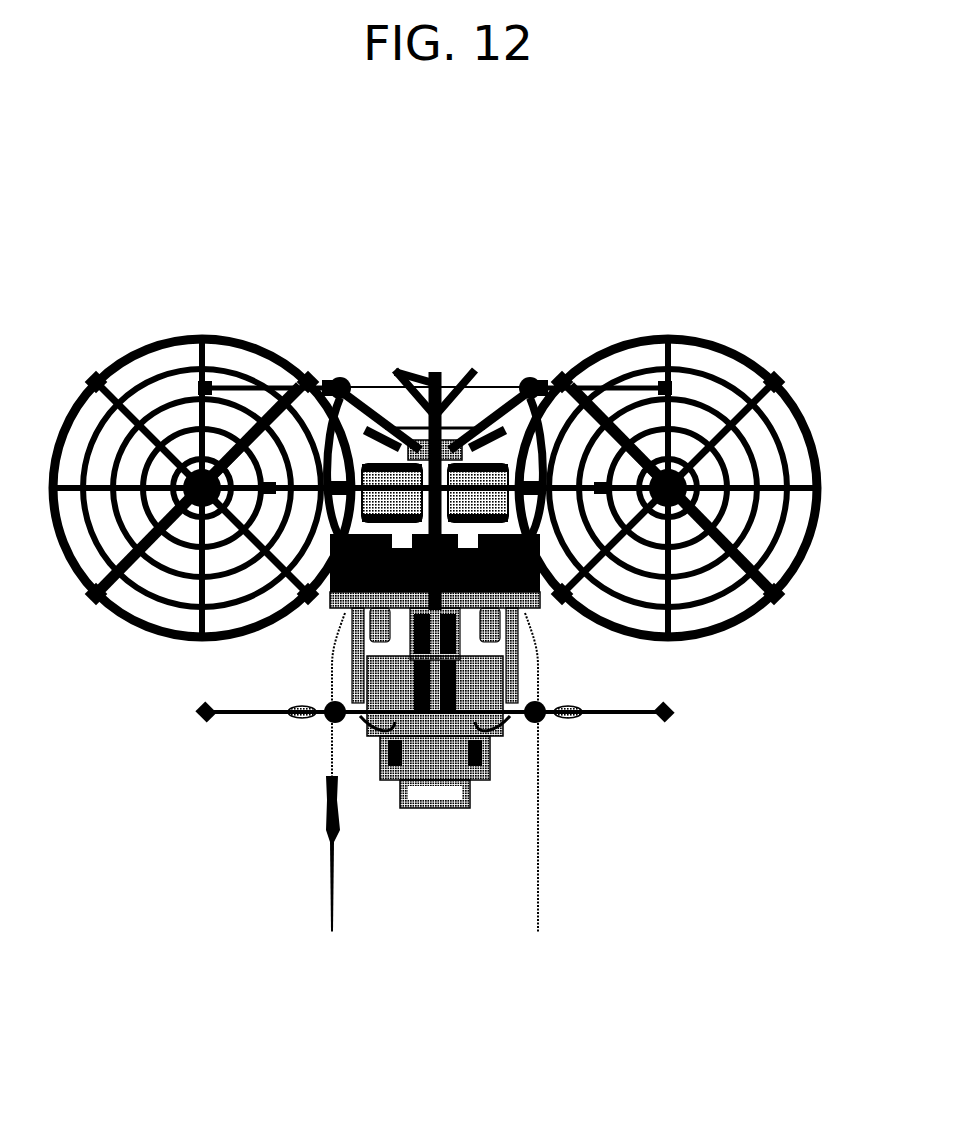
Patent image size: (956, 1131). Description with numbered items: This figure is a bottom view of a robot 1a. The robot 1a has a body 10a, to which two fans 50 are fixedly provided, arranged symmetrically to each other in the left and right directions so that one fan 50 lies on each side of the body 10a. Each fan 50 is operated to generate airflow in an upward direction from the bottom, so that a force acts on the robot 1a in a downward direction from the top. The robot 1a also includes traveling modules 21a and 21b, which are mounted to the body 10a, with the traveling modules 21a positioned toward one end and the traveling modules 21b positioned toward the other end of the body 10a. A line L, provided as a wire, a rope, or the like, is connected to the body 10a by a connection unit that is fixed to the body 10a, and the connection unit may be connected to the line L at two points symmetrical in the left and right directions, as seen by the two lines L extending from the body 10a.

The robot 1a is at (90, 223).
The fan 50 is at (192, 336).
The traveling module 21a is at (341, 366).
The traveling module 21b is at (316, 738).
The body 10a is at (431, 822).
The line L is at (540, 856).